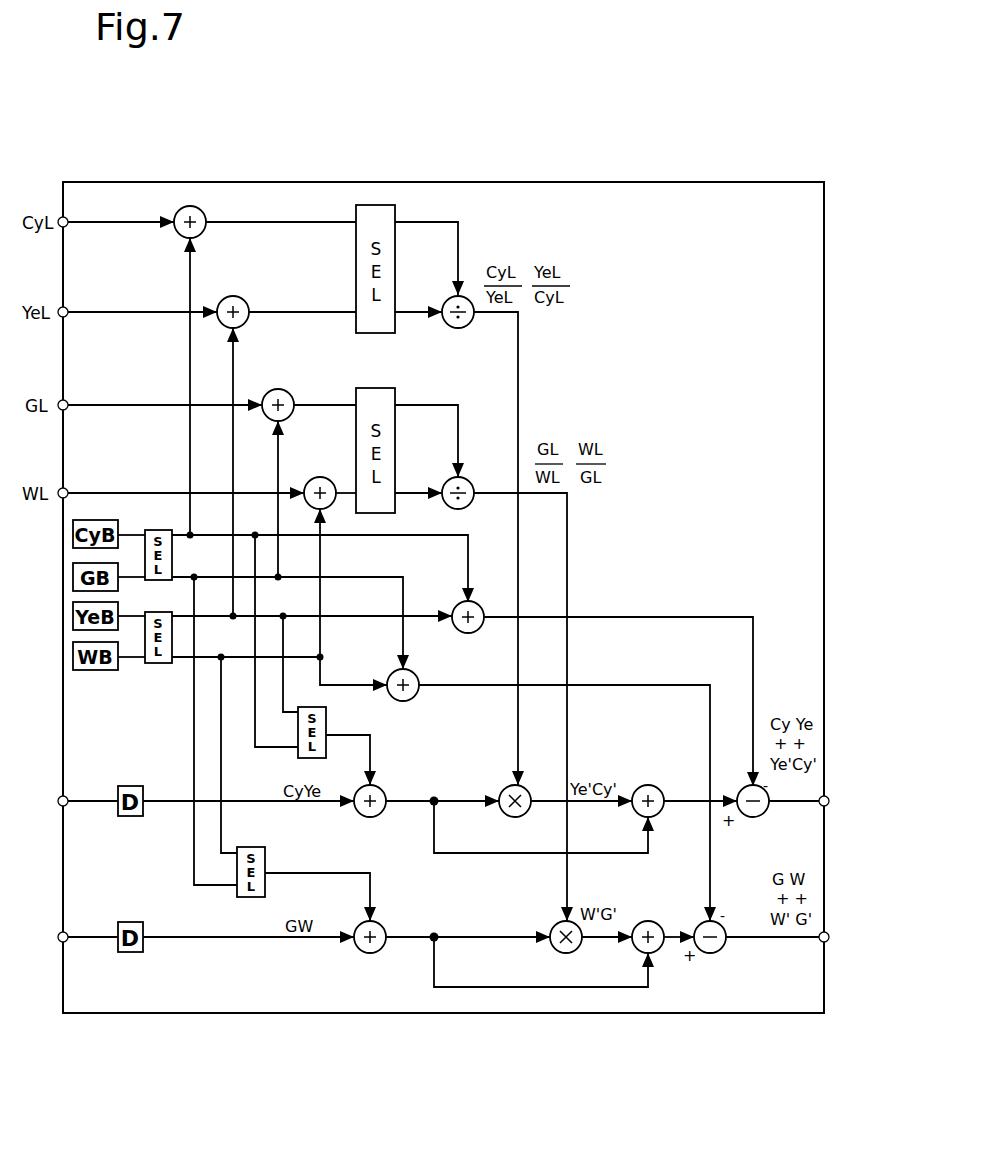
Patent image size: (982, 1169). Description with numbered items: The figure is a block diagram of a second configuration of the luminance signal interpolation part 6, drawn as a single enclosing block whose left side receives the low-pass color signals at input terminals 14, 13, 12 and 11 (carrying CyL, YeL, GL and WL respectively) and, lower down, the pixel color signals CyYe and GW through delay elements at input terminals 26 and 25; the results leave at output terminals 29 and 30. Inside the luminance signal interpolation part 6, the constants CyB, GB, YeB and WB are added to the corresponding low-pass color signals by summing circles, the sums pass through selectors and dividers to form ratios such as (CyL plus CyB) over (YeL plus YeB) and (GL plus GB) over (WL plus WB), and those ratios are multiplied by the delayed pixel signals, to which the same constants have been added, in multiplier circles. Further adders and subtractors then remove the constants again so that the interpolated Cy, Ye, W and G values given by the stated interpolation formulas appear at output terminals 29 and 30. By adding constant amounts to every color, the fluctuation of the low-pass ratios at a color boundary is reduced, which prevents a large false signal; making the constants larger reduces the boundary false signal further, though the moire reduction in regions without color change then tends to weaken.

The luminance signal interpolation part 6 is at (717, 182).
The CyL input terminal 14 is at (68, 217).
The YeL input terminal 13 is at (68, 307).
The GL input terminal 12 is at (68, 400).
The WL input terminal 11 is at (68, 488).
The CyYe signal input terminal 26 is at (67, 796).
The GW signal input terminal 25 is at (67, 931).
The output terminal 29 is at (829, 797).
The output terminal 30 is at (829, 932).